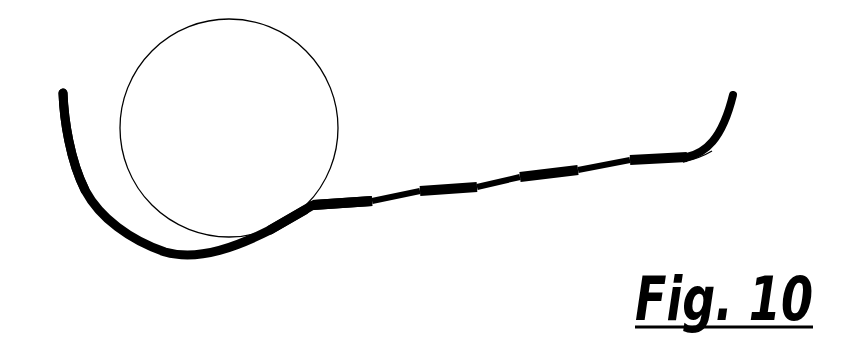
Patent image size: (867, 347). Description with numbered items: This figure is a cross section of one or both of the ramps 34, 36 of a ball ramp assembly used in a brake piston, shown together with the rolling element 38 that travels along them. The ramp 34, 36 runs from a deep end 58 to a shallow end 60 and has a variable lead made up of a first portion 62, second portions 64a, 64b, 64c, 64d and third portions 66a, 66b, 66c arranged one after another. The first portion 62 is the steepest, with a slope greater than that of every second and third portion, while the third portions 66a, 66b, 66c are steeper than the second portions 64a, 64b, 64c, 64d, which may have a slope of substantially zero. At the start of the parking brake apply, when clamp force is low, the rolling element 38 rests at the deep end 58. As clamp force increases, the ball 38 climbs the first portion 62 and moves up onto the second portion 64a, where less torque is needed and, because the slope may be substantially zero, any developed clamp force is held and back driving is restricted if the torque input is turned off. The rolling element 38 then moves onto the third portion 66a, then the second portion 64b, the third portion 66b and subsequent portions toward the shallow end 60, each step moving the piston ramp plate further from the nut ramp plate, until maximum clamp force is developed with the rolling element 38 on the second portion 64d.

The rolling element 38 is at (218, 139).
The ramp 34 is at (378, 200).
The ramp 36 is at (132, 238).
The deep end 58 is at (95, 81).
The shallow end 60 is at (437, 82).
The first portion 62 is at (280, 233).
The second portion 64a is at (352, 207).
The second portion 64b is at (455, 193).
The second portion 64c is at (557, 180).
The second portion 64d is at (658, 163).
The third portion 66a is at (403, 180).
The third portion 66b is at (503, 177).
The third portion 66c is at (605, 163).